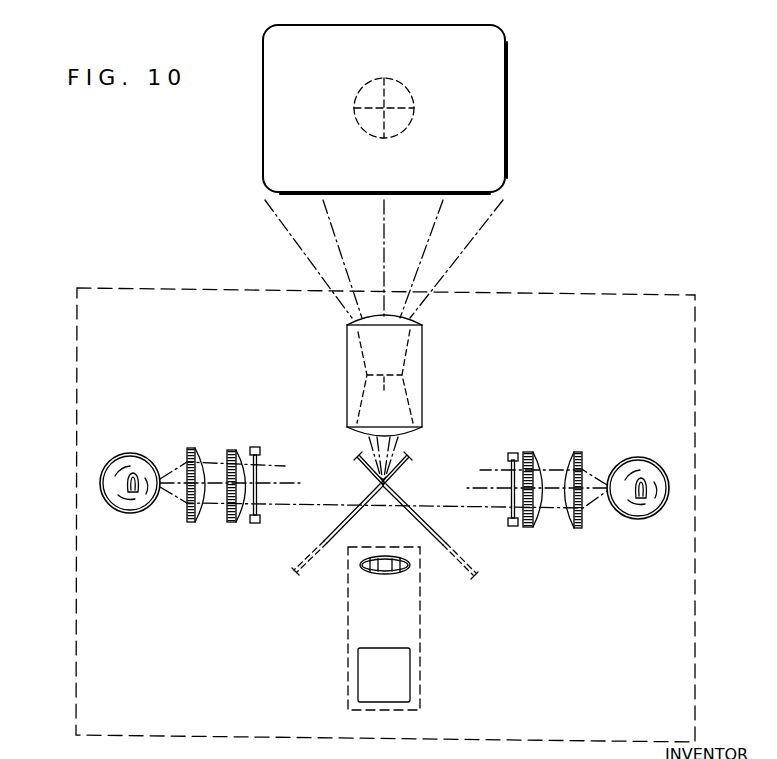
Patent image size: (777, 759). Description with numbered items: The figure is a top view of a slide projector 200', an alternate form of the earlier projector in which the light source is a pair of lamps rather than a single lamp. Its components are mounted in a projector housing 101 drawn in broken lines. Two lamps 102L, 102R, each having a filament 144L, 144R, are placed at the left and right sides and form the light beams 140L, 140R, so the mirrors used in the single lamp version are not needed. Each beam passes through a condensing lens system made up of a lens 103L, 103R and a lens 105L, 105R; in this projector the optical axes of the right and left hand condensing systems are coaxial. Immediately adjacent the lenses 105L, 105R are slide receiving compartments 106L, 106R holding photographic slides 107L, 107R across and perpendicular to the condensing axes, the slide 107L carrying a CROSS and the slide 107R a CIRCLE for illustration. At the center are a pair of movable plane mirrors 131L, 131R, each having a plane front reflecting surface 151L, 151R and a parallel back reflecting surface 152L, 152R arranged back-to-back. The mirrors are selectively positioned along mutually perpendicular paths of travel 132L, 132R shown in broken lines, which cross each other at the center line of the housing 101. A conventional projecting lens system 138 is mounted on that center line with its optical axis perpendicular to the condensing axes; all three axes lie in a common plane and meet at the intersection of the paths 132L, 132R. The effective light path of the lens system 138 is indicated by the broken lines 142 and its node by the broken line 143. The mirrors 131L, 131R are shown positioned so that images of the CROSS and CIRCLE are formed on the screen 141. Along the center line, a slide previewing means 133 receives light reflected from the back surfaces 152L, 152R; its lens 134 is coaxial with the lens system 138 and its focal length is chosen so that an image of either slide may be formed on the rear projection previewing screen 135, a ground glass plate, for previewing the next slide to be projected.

The screen 141 is at (277, 108).
The slide projector 200' is at (127, 237).
The projector housing 101 is at (75, 313).
The effective light path 142 is at (360, 347).
The projecting lens system 138 is at (436, 365).
The node 143 is at (384, 397).
The lamp 102L is at (138, 453).
The lamp 102R is at (632, 460).
The filament 144L is at (128, 490).
The filament 144R is at (646, 496).
The light beam 140L is at (197, 487).
The light beam 140R is at (553, 490).
The lens 103L is at (193, 523).
The lens 103R is at (578, 529).
The lens 105L is at (242, 523).
The lens 105R is at (532, 528).
The slide receiving compartment 106L is at (255, 447).
The slide receiving compartment 106R is at (513, 452).
The photographic slide 107L is at (312, 468).
The photographic slide 107R is at (480, 472).
The reflecting surface 151L is at (360, 489).
The reflecting surface 151R is at (416, 489).
The plane mirror 131L is at (327, 538).
The plane mirror 131R is at (443, 537).
The path of travel 132L is at (309, 573).
The path of travel 132R is at (466, 576).
The reflecting surface 152L is at (360, 509).
The reflecting surface 152R is at (423, 528).
The slide previewing means 133 is at (417, 628).
The lens 134 is at (393, 575).
The rear projection previewing screen 135 is at (395, 653).